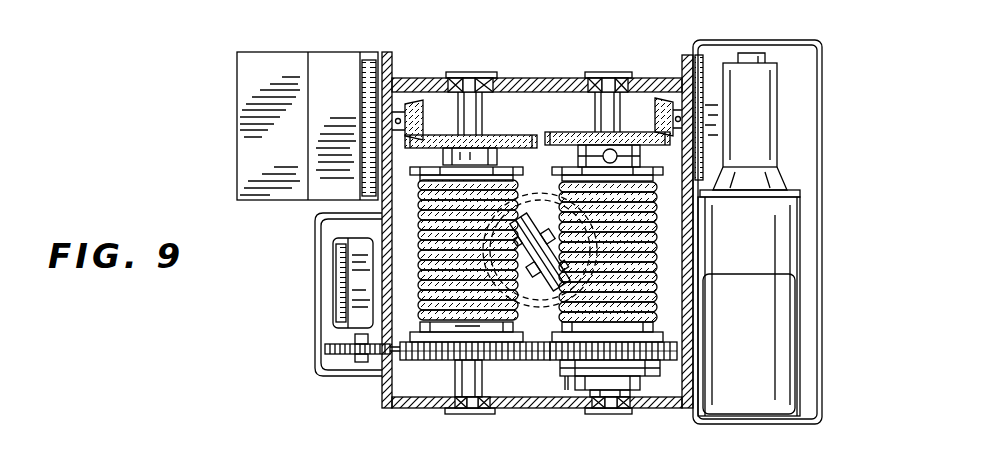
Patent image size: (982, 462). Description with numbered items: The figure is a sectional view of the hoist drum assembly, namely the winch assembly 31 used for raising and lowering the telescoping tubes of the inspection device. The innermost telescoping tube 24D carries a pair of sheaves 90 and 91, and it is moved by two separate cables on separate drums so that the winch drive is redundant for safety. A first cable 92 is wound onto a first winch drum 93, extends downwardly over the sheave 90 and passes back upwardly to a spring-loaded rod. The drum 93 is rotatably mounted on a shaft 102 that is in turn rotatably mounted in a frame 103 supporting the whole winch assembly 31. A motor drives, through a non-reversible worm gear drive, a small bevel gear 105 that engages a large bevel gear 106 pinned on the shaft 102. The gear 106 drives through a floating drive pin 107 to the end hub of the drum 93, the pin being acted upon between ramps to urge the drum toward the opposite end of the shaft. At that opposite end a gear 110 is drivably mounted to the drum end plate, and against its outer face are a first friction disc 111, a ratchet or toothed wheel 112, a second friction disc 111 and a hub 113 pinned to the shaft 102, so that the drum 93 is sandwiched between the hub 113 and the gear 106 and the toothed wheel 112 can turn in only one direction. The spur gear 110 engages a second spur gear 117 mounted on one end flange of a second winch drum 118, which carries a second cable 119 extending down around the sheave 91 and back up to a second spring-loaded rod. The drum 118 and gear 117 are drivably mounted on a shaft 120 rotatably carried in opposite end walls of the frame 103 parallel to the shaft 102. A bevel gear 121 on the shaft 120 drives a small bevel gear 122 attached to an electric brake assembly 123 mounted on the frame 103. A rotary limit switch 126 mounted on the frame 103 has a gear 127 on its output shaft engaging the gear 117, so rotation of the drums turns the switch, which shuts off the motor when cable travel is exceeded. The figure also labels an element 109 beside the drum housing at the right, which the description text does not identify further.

The winch assembly 31 is at (314, 334).
The sheave 90 is at (528, 170).
The sheave 91 is at (549, 362).
The first cable 92 is at (658, 305).
The winch drum 93 is at (663, 170).
The shaft 102 is at (612, 128).
The frame 103 is at (672, 408).
The small bevel gear 105 is at (660, 102).
The large bevel gear 106 is at (543, 168).
The drive pin 107 is at (607, 145).
The pressure housing 109 is at (783, 291).
The gear 110 is at (606, 374).
The friction disc 111 is at (574, 376).
The toothed wheel 112 is at (660, 368).
The hub 113 is at (650, 382).
The second spur gear 117 is at (452, 362).
The second winch drum 118 is at (410, 171).
The second cable 119 is at (420, 281).
The shaft 120 is at (475, 73).
The bevel gear 121 is at (428, 138).
The small bevel gear 122 is at (410, 102).
The electric brake assembly 123 is at (245, 153).
The rotary limit switch 126 is at (340, 304).
The gear 127 is at (345, 357).
The innermost telescoping tube 24D is at (545, 194).